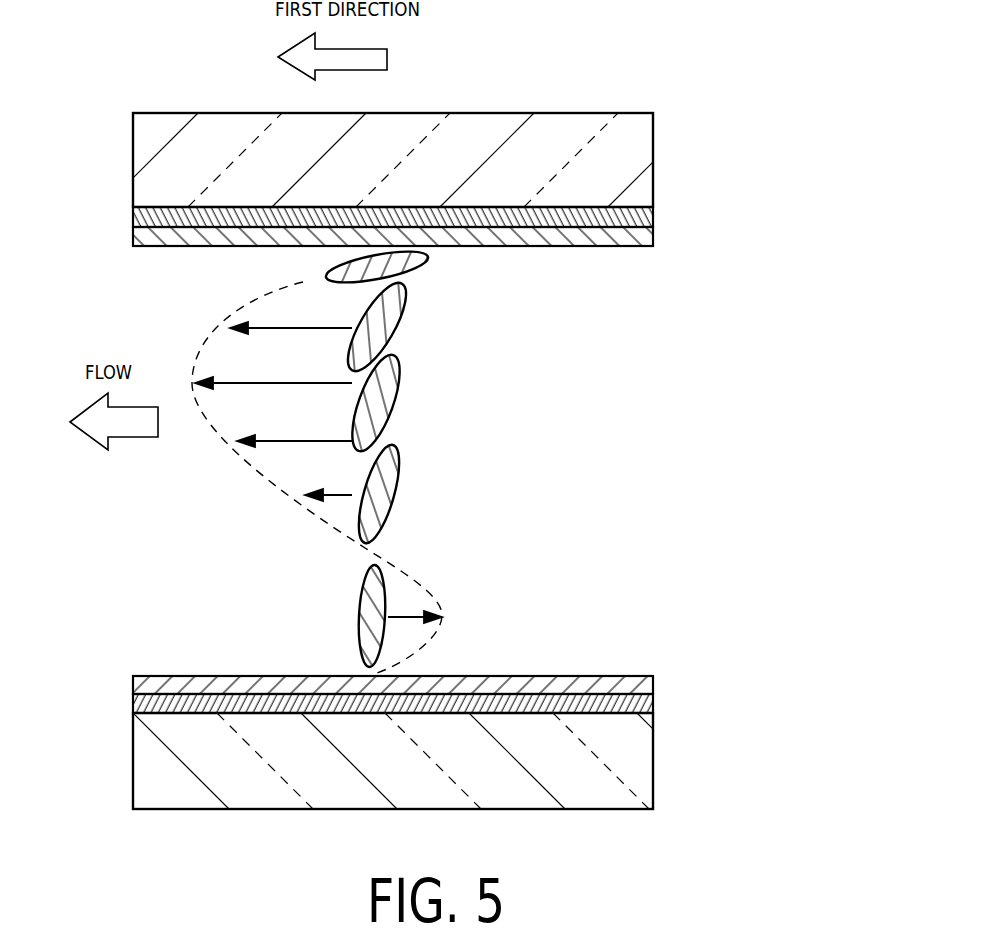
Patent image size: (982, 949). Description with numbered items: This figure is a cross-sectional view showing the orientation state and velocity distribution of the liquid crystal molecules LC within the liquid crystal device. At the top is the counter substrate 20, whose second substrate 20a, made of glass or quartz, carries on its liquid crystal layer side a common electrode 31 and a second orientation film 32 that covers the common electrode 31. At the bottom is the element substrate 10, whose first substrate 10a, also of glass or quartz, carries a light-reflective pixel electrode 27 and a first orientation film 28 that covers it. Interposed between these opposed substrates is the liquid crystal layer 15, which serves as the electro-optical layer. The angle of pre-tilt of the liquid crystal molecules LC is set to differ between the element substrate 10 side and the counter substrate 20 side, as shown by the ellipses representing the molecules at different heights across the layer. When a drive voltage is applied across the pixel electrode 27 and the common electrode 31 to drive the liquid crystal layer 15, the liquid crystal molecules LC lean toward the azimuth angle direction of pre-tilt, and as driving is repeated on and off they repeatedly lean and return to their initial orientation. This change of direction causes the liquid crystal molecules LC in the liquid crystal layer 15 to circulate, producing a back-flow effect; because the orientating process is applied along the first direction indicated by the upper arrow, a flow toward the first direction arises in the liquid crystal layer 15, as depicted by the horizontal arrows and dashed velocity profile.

The counter substrate 20 is at (453, 187).
The second substrate 20a is at (640, 158).
The common electrode 31 is at (655, 214).
The second orientation film 32 is at (426, 244).
The element substrate 10 is at (468, 738).
The first substrate 10a is at (640, 758).
The pixel electrode 27 is at (650, 704).
The first orientation film 28 is at (640, 682).
The liquid crystal layer 15 is at (409, 459).
The liquid crystal molecules LC is at (395, 320).